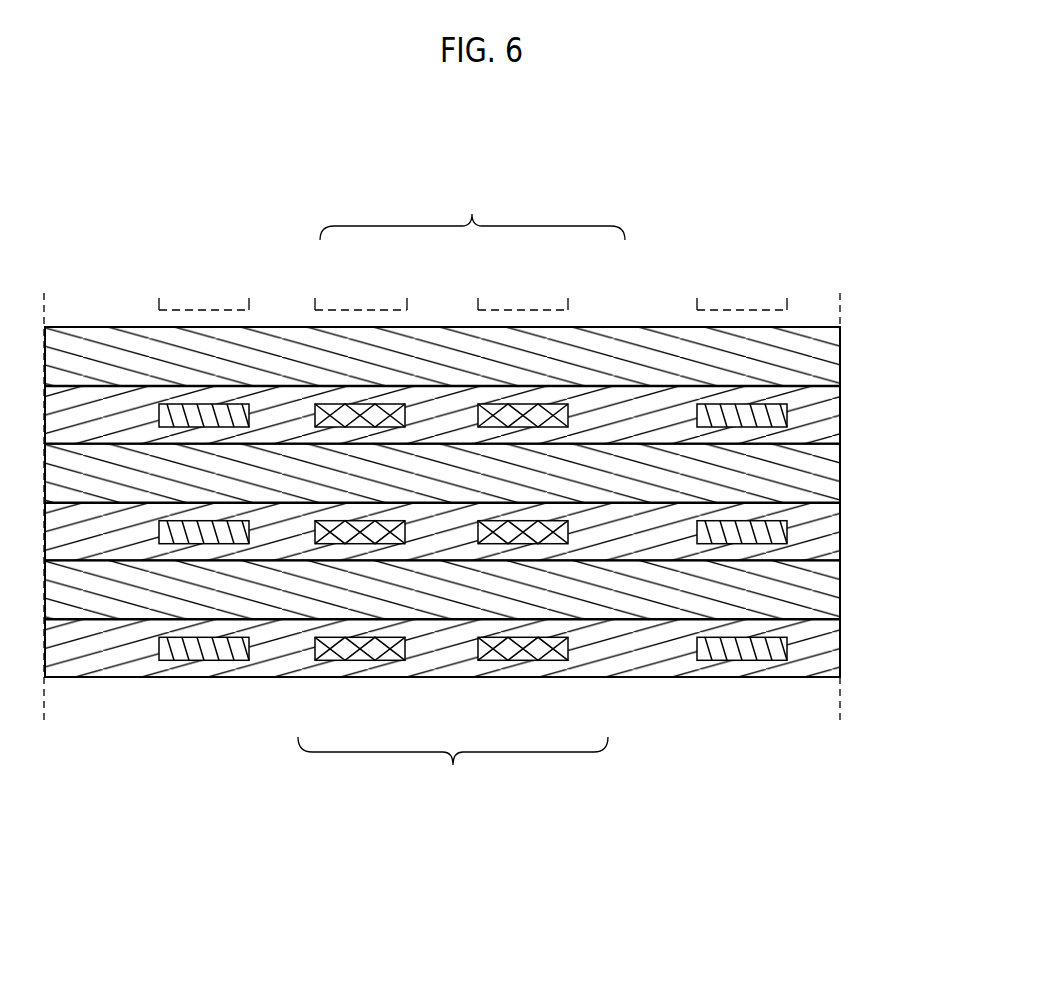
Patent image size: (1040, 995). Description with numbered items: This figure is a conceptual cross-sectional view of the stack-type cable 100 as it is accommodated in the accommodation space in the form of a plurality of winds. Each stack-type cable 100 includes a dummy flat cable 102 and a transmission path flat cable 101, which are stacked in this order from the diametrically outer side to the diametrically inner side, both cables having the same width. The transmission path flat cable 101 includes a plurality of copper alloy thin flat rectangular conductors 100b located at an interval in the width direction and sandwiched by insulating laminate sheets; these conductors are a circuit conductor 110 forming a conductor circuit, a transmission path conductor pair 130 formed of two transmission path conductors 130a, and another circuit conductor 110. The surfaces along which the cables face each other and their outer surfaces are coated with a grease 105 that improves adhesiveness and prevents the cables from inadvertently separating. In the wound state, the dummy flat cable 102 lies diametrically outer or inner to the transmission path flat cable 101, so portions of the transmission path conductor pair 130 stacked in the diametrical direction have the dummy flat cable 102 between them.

The stack-type cable 100 is at (942, 322).
The transmission path flat cable 101 is at (842, 415).
The dummy flat cable 102 is at (842, 352).
The grease 105 is at (843, 397).
The circuit conductor 110 is at (208, 404).
The transmission path conductor pair 130 is at (461, 488).
The transmission path conductor 130a is at (365, 403).
The flat rectangular conductor 100b is at (483, 488).